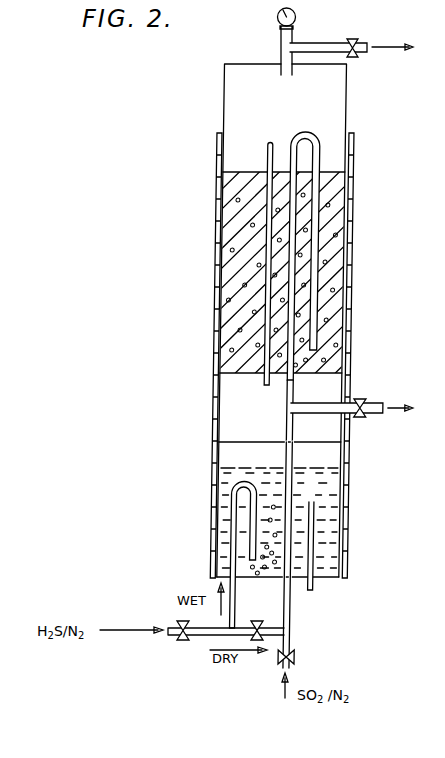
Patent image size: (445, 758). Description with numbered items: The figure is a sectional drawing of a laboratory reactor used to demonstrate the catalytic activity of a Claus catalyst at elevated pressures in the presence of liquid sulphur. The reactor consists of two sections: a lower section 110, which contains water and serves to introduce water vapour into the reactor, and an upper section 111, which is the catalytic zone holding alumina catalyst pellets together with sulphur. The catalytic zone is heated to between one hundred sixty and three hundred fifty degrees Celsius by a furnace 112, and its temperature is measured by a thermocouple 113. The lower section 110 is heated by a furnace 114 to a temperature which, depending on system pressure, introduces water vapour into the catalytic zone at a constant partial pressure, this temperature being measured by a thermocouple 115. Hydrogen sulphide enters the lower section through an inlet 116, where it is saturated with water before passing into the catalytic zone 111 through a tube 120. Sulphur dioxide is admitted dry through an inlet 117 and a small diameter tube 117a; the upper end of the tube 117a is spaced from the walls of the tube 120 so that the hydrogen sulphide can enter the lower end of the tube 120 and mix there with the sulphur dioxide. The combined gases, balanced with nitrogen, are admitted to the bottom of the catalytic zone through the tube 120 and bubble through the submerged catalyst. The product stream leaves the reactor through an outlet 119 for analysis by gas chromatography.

The lower section 110 is at (345, 505).
The upper section 111 is at (338, 308).
The furnace 112 is at (212, 294).
The thermocouple 113 is at (268, 143).
The furnace 114 is at (214, 496).
The thermocouple 115 is at (317, 588).
The inlet 116 is at (180, 622).
The inlet 117 is at (290, 646).
The small diameter tube 117a is at (293, 459).
The outlet 119 is at (357, 53).
The tube 120 is at (318, 112).